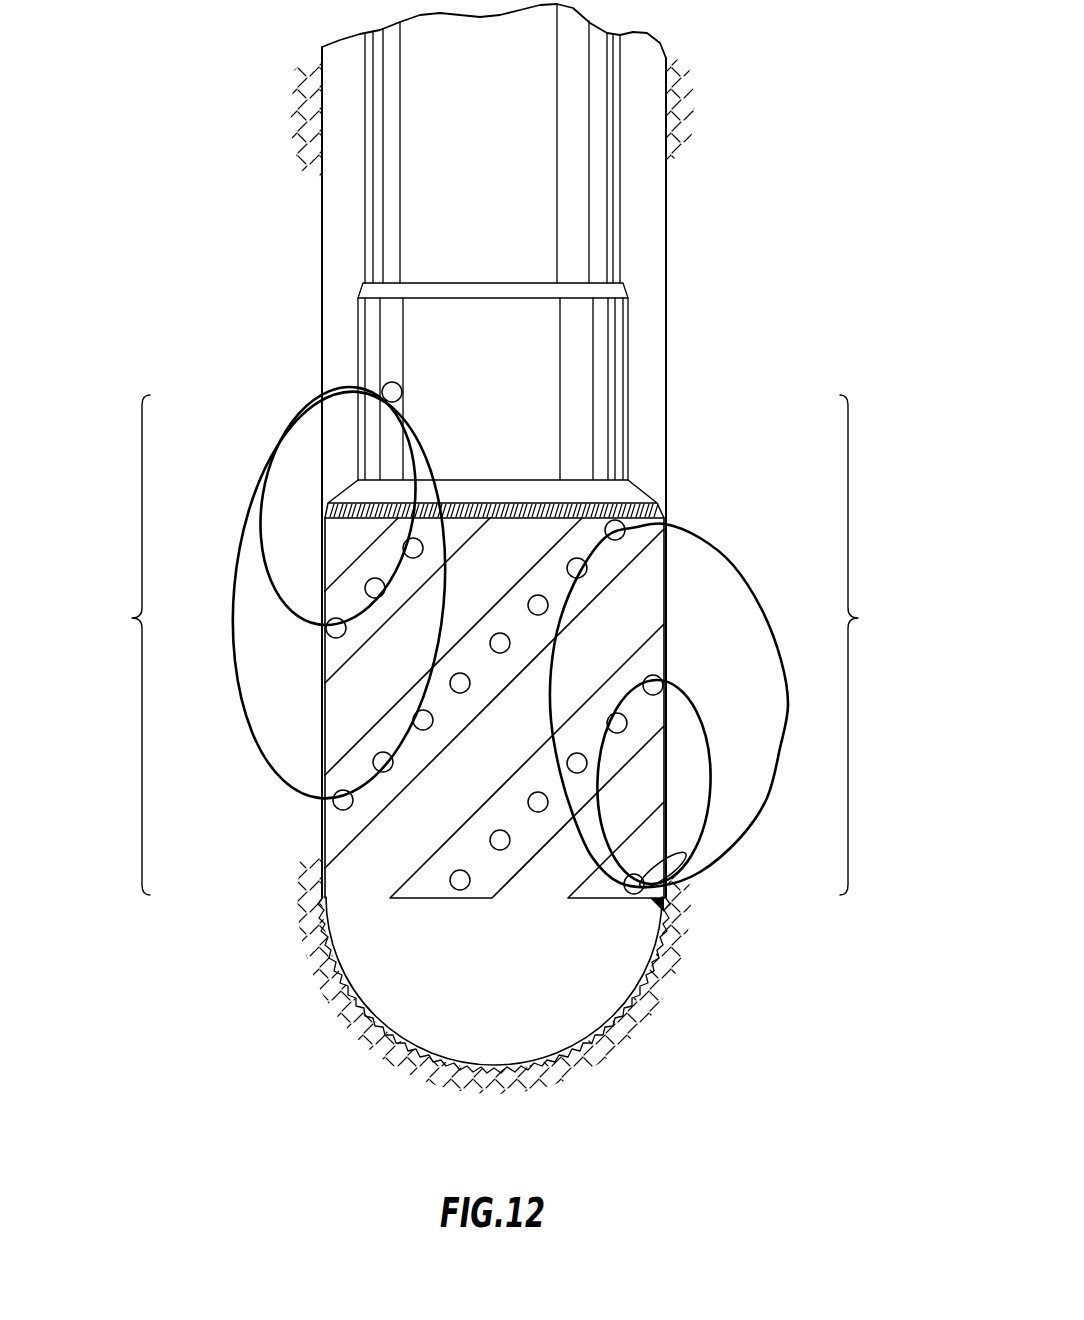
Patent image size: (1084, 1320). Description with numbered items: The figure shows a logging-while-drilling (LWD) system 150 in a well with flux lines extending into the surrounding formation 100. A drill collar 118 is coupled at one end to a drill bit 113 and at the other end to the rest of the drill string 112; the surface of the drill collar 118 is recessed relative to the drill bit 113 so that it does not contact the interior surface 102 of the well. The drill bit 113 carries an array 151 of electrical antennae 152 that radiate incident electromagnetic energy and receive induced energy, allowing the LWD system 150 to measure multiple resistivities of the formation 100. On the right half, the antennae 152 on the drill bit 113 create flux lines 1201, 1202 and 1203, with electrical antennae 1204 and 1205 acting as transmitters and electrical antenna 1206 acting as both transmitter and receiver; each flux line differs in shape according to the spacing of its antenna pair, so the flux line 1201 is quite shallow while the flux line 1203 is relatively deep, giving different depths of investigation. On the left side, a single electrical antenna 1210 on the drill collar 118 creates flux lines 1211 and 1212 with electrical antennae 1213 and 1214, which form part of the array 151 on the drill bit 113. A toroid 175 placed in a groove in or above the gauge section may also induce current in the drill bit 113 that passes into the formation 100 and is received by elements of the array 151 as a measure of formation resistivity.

The formation 100 is at (845, 266).
The interior surface 102 is at (328, 237).
The drill string 112 is at (490, 89).
The drill bit 113 is at (397, 1022).
The drill collar 118 is at (505, 362).
The LWD system 150 is at (131, 618).
The array of electrical antennae 151 is at (377, 754).
The electrical antennae 152 is at (463, 892).
The toroid 175 is at (642, 511).
The flux line 1201 is at (680, 855).
The flux line 1202 is at (723, 779).
The flux line 1203 is at (729, 560).
The electrical antenna 1204 is at (630, 527).
The electrical antenna 1205 is at (652, 673).
The electrical antenna 1206 is at (654, 903).
The electrical antenna 1210 is at (388, 378).
The flux line 1211 is at (252, 492).
The flux line 1212 is at (268, 583).
The electrical antenna 1213 is at (327, 812).
The electrical antenna 1214 is at (327, 652).